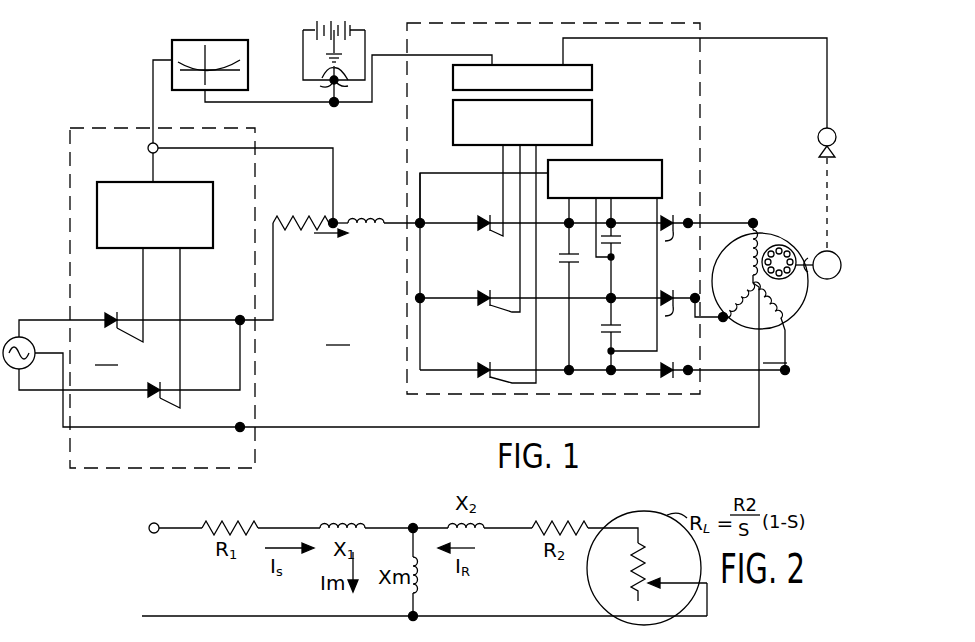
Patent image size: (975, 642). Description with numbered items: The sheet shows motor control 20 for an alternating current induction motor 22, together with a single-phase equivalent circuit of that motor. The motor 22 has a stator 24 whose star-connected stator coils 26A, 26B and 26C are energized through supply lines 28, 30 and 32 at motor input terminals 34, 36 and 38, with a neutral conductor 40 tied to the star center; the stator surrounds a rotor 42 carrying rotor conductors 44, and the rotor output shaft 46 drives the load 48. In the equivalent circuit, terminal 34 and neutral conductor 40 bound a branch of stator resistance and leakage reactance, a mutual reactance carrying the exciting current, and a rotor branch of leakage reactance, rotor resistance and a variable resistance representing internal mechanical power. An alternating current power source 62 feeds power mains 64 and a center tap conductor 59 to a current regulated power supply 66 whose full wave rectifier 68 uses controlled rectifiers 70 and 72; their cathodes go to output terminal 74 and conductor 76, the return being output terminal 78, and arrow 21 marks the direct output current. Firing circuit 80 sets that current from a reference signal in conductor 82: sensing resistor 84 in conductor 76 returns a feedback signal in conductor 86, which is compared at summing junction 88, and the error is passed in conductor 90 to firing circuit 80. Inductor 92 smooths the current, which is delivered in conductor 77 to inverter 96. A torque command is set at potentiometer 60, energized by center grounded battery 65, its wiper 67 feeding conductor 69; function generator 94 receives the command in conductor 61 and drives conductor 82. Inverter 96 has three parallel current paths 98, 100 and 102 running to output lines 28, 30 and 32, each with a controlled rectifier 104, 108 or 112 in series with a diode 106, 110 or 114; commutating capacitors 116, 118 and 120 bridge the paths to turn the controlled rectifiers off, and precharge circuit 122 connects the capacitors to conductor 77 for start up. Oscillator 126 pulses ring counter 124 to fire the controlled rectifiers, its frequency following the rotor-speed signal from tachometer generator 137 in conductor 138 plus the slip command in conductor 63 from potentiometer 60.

In FIG. 1, the motor control 20 is at (338, 335).
In FIG. 1, the output current 21 is at (326, 238).
In FIG. 1, the alternating current induction motor 22 is at (760, 298).
In FIG. 1, the stator 24 is at (803, 316).
In FIG. 1, the stator coil 26A is at (747, 256).
In FIG. 1, the stator coil 26B is at (750, 286).
In FIG. 1, the stator coil 26C is at (789, 332).
In FIG. 1, the supply line 28 is at (713, 221).
In FIG. 1, the supply line 30 is at (714, 320).
In FIG. 1, the supply line 32 is at (738, 373).
In FIG. 1, the motor input terminal 34 is at (755, 221).
In FIG. 2, the motor input terminal 34 is at (148, 529).
In FIG. 1, the motor input terminal 36 is at (727, 322).
In FIG. 1, the motor input terminal 38 is at (785, 376).
In FIG. 1, the neutral conductor 40 is at (692, 429).
In FIG. 2, the neutral conductor 40 is at (296, 617).
In FIG. 1, the rotor 42 is at (798, 250).
In FIG. 1, the rotor conductors 44 is at (778, 244).
In FIG. 1, the rotor output shaft 46 is at (781, 287).
In FIG. 1, the load 48 is at (827, 280).
In FIG. 1, the supply line 59 is at (63, 429).
In FIG. 1, the potentiometer 60 is at (322, 75).
In FIG. 1, the conductor 61 is at (300, 104).
In FIG. 1, the source of alternating current power 62 is at (36, 336).
In FIG. 1, the conductor 63 is at (366, 104).
In FIG. 1, the power mains 64 is at (35, 318).
In FIG. 1, the center grounded battery 65 is at (313, 30).
In FIG. 1, the current regulated power supply 66 is at (256, 362).
In FIG. 1, the wiper 67 is at (354, 82).
In FIG. 1, the full wave rectifier 68 is at (107, 355).
In FIG. 1, the conductor 69 is at (318, 89).
In FIG. 1, the controlled rectifier 70 is at (113, 310).
In FIG. 1, the controlled rectifier 72 is at (157, 382).
In FIG. 1, the output terminal 74 is at (242, 316).
In FIG. 1, the conductor 76 is at (335, 220).
In FIG. 1, the conductor 77 is at (413, 220).
In FIG. 1, the output terminal 78 is at (240, 425).
In FIG. 1, the firing circuit 80 is at (213, 220).
In FIG. 1, the conductor 82 is at (153, 104).
In FIG. 1, the resistor 84 is at (302, 228).
In FIG. 1, the conductor 86 is at (333, 148).
In FIG. 1, the summing junction 88 is at (155, 170).
In FIG. 1, the conductor 90 is at (149, 153).
In FIG. 1, the inductor 92 is at (366, 232).
In FIG. 1, the function generator 94 is at (172, 48).
In FIG. 1, the inverter 96 is at (701, 98).
In FIG. 1, the current path 98 is at (445, 226).
In FIG. 1, the current path 100 is at (449, 300).
In FIG. 1, the current path 102 is at (425, 370).
In FIG. 1, the controlled rectifier 104 is at (485, 218).
In FIG. 1, the diode 106 is at (676, 236).
In FIG. 1, the controlled rectifier 108 is at (489, 290).
In FIG. 1, the diode 110 is at (677, 310).
In FIG. 1, the controlled rectifier 112 is at (493, 368).
In FIG. 1, the diode 114 is at (670, 349).
In FIG. 1, the commutating capacitor 116 is at (620, 231).
In FIG. 1, the commutating capacitor 118 is at (621, 318).
In FIG. 1, the commutating capacitor 120 is at (582, 266).
In FIG. 1, the precharge circuit 122 is at (628, 160).
In FIG. 1, the ring counter 124 is at (592, 120).
In FIG. 1, the oscillator 126 is at (592, 78).
In FIG. 1, the tachometer generator 137 is at (820, 129).
In FIG. 1, the conductor 138 is at (734, 38).